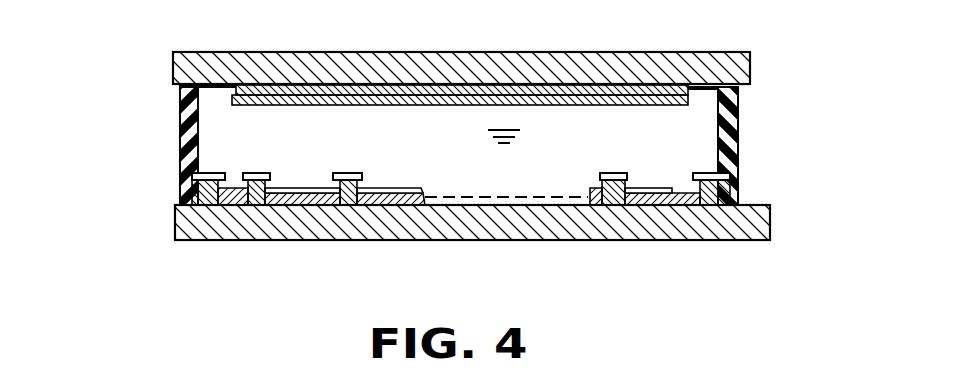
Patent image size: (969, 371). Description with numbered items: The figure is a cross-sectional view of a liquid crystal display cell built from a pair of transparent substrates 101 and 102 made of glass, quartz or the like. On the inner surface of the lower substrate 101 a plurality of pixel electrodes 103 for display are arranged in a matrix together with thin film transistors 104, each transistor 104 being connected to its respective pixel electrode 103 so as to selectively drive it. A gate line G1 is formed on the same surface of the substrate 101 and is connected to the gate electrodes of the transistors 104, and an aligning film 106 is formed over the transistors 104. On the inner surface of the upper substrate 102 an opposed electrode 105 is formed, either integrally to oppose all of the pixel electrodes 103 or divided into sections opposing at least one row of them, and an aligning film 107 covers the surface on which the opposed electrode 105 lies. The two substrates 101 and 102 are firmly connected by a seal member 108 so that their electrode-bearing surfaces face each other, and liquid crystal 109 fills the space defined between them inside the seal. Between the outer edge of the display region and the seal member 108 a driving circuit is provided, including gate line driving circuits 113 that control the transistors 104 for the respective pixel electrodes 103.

The transparent substrate 101 is at (700, 241).
The transparent substrate 102 is at (701, 55).
The pixel electrode 103 is at (303, 198).
The thin film transistor 104 is at (272, 180).
The opposed electrode 105 is at (352, 96).
The aligning film 106 is at (267, 173).
The aligning film 107 is at (605, 101).
The seal member 108 is at (180, 129).
The liquid crystal 109 is at (552, 121).
The gate line driving circuit 113 is at (213, 172).
The gate line G1 is at (233, 178).